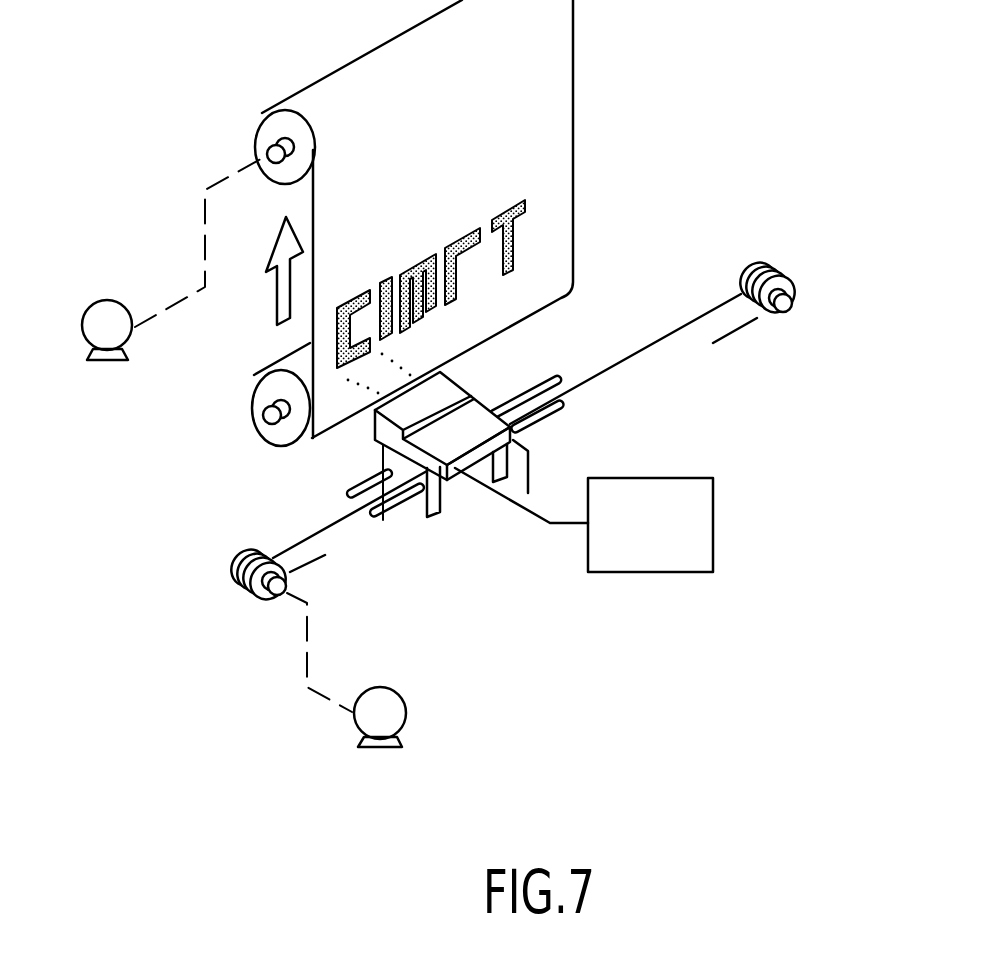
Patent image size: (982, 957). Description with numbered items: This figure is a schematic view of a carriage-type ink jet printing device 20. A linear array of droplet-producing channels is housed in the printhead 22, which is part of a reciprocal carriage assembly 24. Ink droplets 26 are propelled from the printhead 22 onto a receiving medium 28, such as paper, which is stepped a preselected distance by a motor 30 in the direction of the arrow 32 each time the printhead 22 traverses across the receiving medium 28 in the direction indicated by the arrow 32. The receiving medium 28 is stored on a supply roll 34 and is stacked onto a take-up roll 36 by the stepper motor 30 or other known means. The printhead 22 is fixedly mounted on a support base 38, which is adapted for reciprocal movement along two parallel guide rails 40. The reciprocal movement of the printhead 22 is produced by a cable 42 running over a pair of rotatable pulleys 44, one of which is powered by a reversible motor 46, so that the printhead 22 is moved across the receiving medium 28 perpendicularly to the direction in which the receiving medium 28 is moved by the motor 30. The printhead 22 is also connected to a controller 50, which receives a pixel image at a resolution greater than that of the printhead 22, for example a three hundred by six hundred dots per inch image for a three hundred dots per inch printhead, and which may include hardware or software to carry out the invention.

The carriage-type ink jet printing device 20 is at (645, 127).
The printhead 22 is at (378, 444).
The reciprocal carriage assembly 24 is at (546, 463).
The ink droplets 26 is at (390, 365).
The receiving medium 28 is at (573, 92).
The motor 30 is at (92, 303).
The arrow 32 is at (275, 298).
The supply roll 34 is at (252, 387).
The take-up roll 36 is at (258, 135).
The support base 38 is at (390, 457).
The guide rails 40 is at (383, 520).
The cable 42 is at (287, 547).
The rotatable pulleys 44 is at (262, 597).
The reversible motor 46 is at (380, 688).
The controller 50 is at (713, 497).